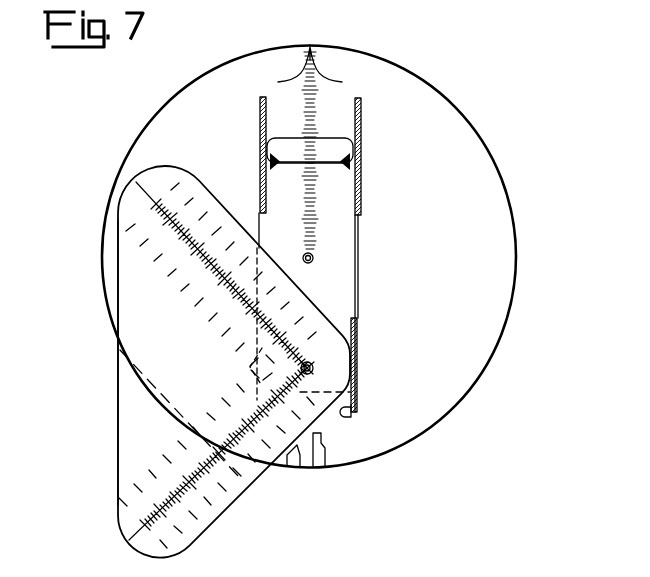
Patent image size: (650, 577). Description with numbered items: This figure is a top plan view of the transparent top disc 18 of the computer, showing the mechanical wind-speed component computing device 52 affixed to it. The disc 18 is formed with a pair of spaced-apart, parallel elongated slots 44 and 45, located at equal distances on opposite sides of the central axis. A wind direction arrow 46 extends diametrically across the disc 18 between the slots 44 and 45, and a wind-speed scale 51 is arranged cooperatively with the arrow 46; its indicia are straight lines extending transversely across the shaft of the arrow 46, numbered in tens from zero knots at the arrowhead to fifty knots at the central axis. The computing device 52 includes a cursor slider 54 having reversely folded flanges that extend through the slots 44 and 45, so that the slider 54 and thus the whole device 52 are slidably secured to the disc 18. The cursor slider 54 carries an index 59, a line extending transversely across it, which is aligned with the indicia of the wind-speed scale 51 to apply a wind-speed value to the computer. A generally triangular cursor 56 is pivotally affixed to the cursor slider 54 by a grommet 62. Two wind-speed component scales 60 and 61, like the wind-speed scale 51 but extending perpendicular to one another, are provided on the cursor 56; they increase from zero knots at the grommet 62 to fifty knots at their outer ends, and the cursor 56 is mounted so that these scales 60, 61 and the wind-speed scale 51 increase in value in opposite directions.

The disc 18 is at (516, 190).
The elongated slot 44 is at (358, 340).
The elongated slot 45 is at (258, 186).
The wind direction arrow 46 is at (330, 75).
The wind-speed scale 51 is at (328, 122).
The wind-speed component computing device 52 is at (108, 438).
The cursor slider 54 is at (347, 288).
The cursor 56 is at (117, 373).
The index 59 is at (330, 162).
The wind-speed component scale 60 is at (160, 238).
The wind-speed component scale 61 is at (200, 538).
The grommet 62 is at (313, 369).